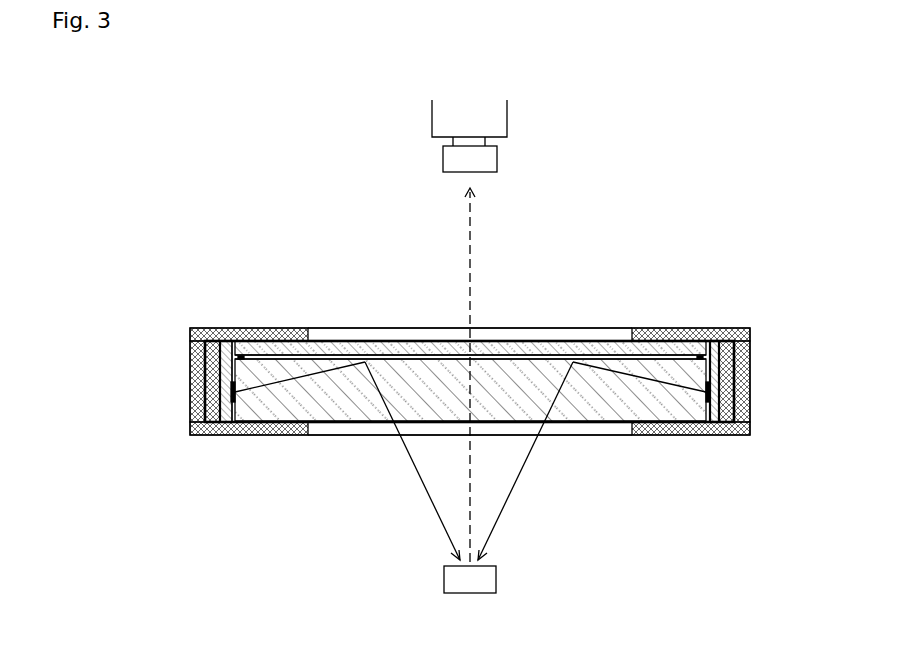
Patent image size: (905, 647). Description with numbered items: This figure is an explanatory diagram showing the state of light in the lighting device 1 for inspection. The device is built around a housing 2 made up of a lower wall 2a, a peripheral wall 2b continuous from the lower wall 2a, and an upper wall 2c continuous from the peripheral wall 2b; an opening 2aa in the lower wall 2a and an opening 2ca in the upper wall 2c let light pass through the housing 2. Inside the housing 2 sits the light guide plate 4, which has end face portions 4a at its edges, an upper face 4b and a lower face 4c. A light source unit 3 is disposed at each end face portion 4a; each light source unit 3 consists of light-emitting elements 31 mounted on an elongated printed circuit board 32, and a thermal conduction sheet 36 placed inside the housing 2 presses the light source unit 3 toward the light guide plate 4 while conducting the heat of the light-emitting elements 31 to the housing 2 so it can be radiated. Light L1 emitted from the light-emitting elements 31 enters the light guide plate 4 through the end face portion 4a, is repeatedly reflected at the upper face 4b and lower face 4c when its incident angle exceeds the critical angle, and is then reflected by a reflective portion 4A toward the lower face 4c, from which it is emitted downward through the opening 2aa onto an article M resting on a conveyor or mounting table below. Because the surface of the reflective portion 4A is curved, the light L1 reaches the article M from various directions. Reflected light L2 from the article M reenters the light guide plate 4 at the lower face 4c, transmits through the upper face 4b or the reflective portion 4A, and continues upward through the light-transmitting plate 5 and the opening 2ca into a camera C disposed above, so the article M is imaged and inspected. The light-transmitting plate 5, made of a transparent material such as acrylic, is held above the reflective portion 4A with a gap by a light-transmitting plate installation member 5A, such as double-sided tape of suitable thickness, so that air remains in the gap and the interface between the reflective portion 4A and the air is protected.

The lighting device for inspection 1 is at (470, 352).
The housing 2 is at (470, 374).
The lower wall 2a is at (290, 428).
The opening 2aa is at (346, 432).
The peripheral wall 2b is at (197, 392).
The upper wall 2c is at (228, 333).
The opening 2ca is at (350, 328).
The light source unit 3 is at (732, 339).
The light-emitting element 31 is at (706, 382).
The printed circuit board 32 is at (714, 345).
The thermal conduction sheet 36 is at (727, 360).
The light guide plate 4 is at (683, 410).
The reflective portion 4A is at (294, 358).
The end face portion 4a is at (237, 372).
The upper face 4b is at (240, 356).
The lower face 4c is at (578, 410).
The light-transmitting plate 5 is at (412, 347).
The light-transmitting plate installation member 5A is at (240, 357).
The camera C is at (508, 113).
The article M is at (490, 585).
The light L1 is at (469, 461).
The reflected light L2 is at (482, 375).